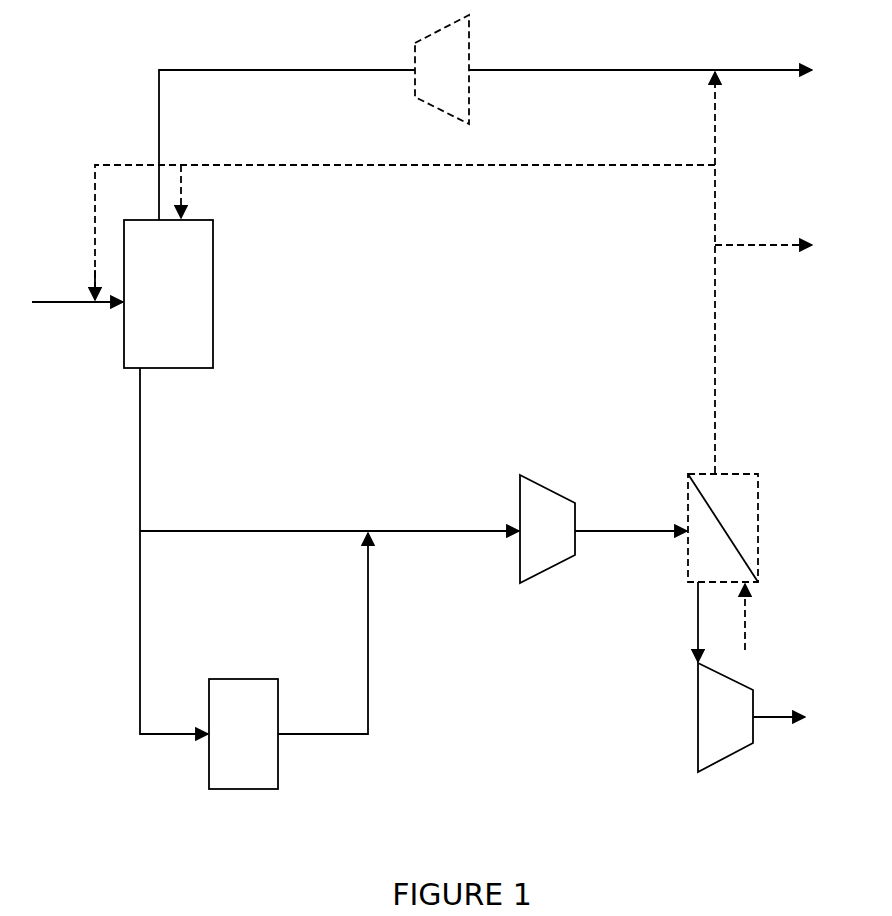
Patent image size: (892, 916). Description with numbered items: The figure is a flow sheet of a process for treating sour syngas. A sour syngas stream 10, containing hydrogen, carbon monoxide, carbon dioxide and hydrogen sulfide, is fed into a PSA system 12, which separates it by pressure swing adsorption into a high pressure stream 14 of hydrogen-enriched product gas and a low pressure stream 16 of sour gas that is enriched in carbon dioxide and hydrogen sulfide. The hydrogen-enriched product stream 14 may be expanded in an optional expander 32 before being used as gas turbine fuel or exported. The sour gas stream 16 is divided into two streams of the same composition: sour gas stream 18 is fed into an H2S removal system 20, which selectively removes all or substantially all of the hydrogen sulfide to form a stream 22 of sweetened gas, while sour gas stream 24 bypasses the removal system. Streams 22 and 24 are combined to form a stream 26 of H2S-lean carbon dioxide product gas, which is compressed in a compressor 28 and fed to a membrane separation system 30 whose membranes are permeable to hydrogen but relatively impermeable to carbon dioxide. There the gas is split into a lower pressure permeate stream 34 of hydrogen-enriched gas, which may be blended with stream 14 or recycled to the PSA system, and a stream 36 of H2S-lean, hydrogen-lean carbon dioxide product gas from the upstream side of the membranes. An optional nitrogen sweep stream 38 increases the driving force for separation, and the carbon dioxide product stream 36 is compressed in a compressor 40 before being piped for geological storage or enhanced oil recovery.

The sour syngas stream 10 is at (58, 302).
The PSA system 12 is at (168, 294).
The high pressure stream of H2-enriched product gas 14 is at (290, 71).
The low pressure stream of sour gas 16 is at (140, 450).
The sour gas stream 18 is at (140, 637).
The H2S removal system 20 is at (243, 734).
The stream of sweetened gas 22 is at (370, 700).
The sour gas stream 24 is at (320, 530).
The stream of H2S-lean CO2 product gas 26 is at (430, 530).
The compressor 28 is at (603, 529).
The membrane separation system 30 is at (742, 473).
The expander 32 is at (613, 69).
The stream of H2-enriched gas 34 is at (715, 325).
The stream of H2S-lean, H2-lean CO2 product gas 36 is at (698, 622).
The N2 sweep stream 38 is at (745, 622).
The compressor 40 is at (751, 717).